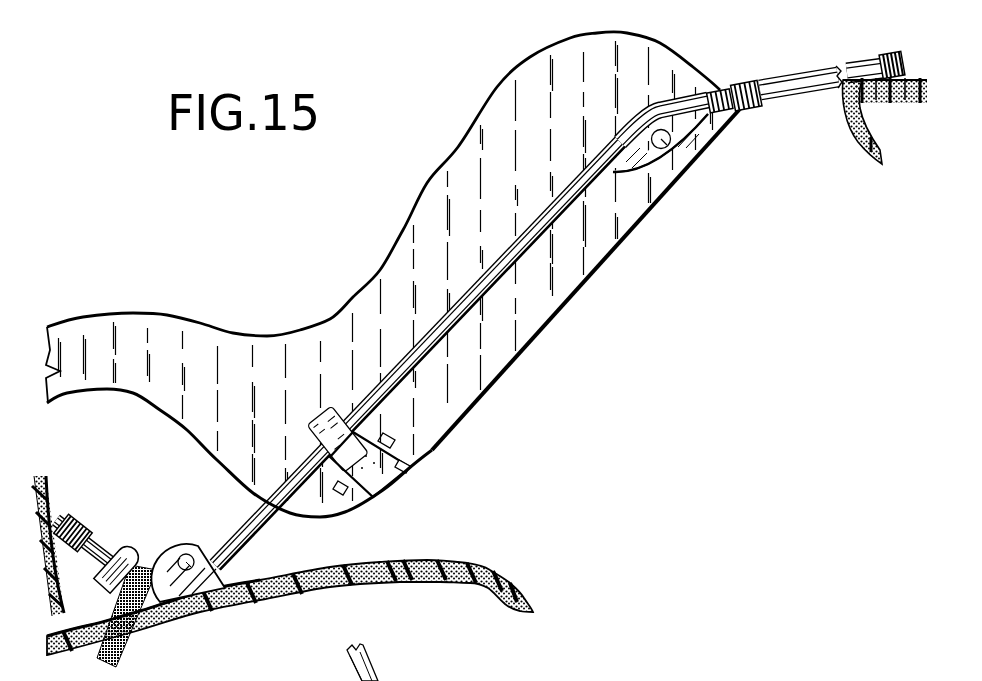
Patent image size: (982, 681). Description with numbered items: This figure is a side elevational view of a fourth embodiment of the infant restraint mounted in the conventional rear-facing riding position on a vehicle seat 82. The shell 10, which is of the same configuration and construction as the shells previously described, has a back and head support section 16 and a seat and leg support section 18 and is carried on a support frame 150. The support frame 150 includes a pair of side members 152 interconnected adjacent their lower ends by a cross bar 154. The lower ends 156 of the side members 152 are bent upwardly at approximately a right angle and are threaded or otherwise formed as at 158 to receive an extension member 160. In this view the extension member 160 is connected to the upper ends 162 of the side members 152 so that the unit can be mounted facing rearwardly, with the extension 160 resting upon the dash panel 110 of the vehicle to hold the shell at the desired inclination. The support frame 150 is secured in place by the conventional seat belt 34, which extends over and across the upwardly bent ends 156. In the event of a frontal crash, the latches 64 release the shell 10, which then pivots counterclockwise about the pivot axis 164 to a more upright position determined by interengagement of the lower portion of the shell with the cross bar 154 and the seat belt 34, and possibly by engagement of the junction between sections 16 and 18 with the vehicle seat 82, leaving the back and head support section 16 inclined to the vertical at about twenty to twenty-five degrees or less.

The shell 10 is at (424, 185).
The back and head support section 16 is at (557, 312).
The seat and leg support section 18 is at (160, 410).
The seat belt 34 is at (123, 650).
The latches 64 is at (320, 415).
The vehicle seat 82 is at (483, 565).
The dash panel 110 is at (862, 140).
The support frame 150 is at (464, 288).
The side members 152 is at (482, 308).
The cross bar 154 is at (213, 533).
The lower ends 156 is at (108, 550).
The threaded portion 158 is at (72, 528).
The extension member 160 is at (807, 70).
The upper ends 162 is at (697, 93).
The pivot axis 164 is at (670, 143).